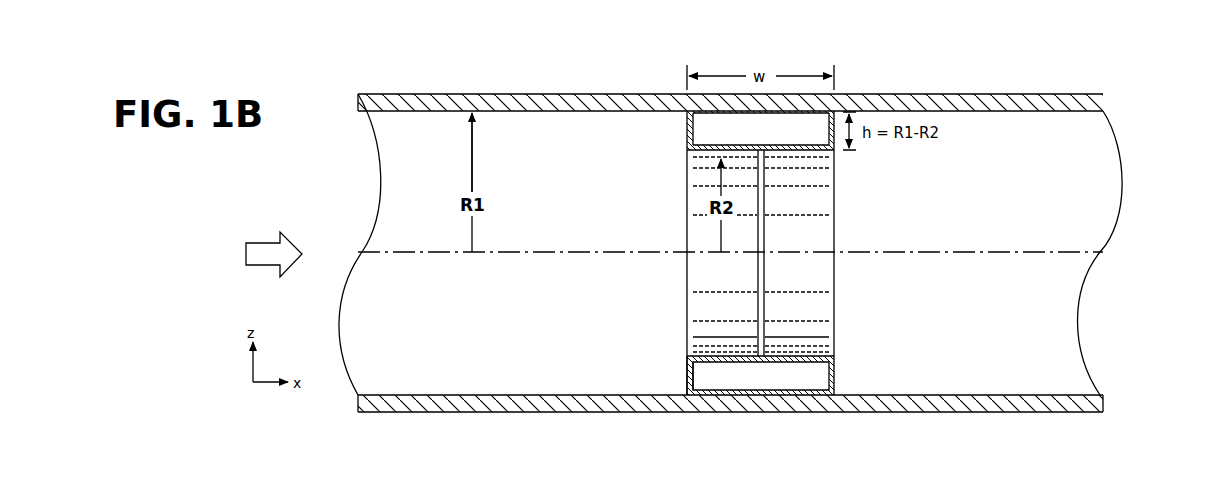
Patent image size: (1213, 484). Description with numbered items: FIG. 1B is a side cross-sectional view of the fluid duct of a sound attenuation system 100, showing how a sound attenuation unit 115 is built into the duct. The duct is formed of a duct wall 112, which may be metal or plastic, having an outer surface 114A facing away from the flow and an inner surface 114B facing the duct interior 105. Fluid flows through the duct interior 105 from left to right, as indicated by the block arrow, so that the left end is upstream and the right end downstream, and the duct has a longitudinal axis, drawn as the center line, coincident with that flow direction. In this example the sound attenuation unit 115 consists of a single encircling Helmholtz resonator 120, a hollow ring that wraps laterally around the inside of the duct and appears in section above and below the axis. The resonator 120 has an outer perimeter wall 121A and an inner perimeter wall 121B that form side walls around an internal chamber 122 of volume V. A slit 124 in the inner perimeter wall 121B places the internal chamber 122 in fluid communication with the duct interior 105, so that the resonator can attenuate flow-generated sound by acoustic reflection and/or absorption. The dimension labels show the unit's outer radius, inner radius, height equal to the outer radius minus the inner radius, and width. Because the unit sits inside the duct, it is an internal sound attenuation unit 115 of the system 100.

The sound attenuation system 100 is at (378, 66).
The duct wall 112 is at (588, 92).
The outer surface of the duct wall 114A is at (1035, 94).
The inner surface of the duct wall 114B is at (1062, 111).
The duct interior 105 is at (730, 244).
The sound attenuation unit 115 is at (684, 377).
The encircling Helmholtz resonator 120 is at (836, 379).
The outer perimeter wall 121A is at (816, 120).
The inner perimeter wall 121B is at (787, 138).
The internal chamber 122 is at (760, 130).
The slit 124 is at (766, 350).